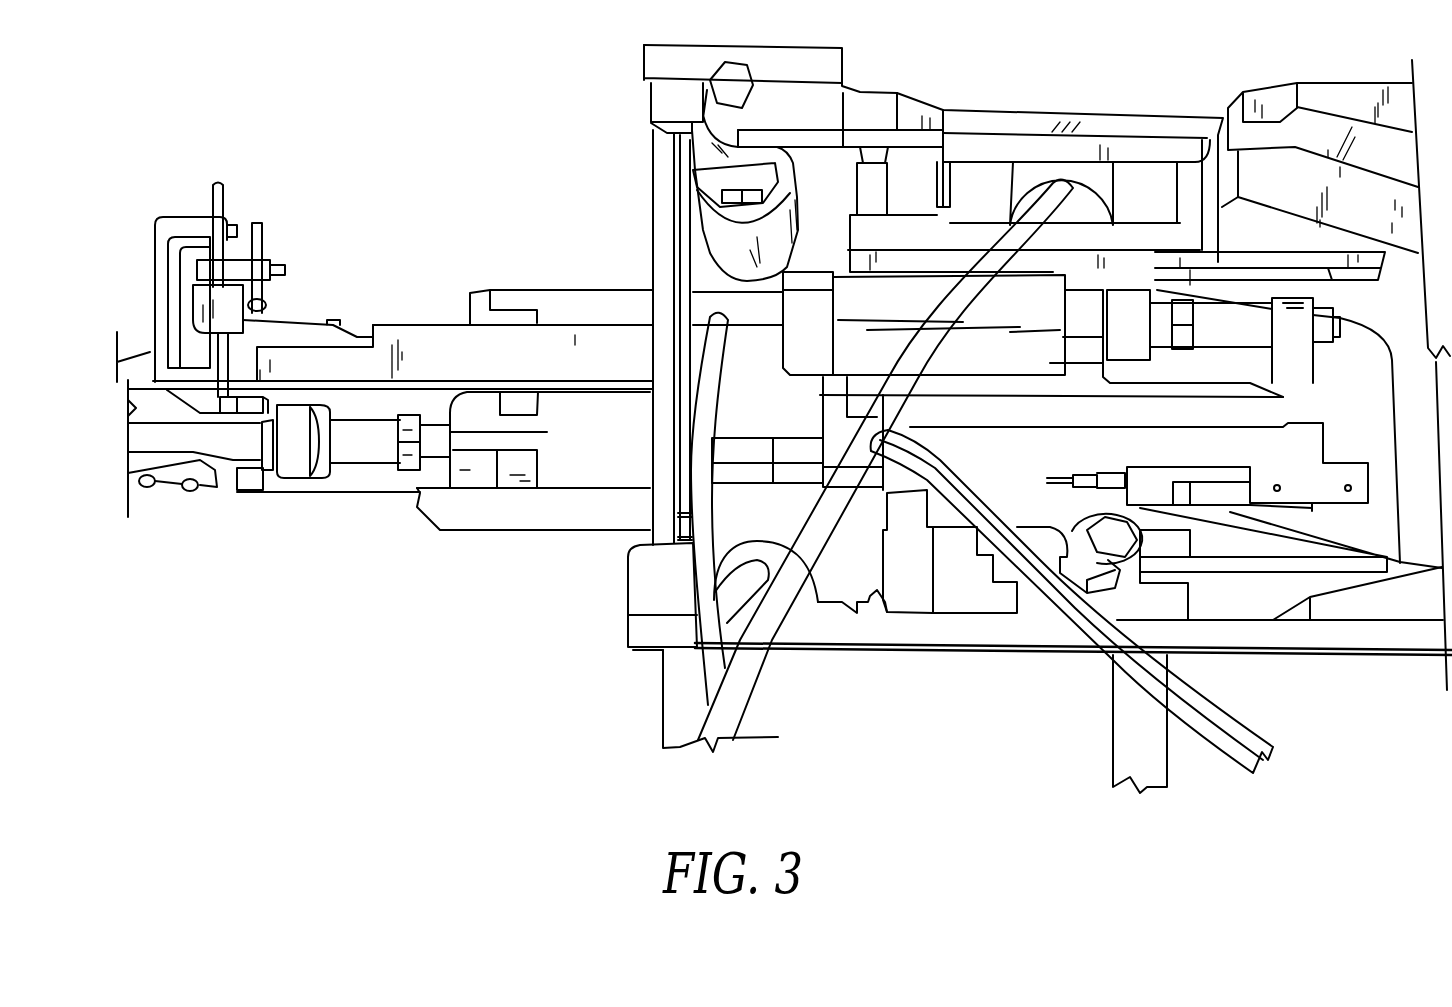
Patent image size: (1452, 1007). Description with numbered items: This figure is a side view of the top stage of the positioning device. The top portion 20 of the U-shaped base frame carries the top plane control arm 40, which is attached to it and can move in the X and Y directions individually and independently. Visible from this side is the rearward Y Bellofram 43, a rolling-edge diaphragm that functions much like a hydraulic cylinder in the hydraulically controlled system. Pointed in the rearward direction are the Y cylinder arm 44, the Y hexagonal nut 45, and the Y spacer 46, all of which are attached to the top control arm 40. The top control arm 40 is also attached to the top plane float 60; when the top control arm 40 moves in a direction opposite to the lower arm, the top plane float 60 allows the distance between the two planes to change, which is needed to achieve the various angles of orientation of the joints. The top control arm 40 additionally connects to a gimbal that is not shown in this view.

The top portion 20 is at (1033, 147).
The top plane control arm 40 is at (443, 343).
The rearward Y Bellofram 43 is at (1013, 337).
The Y cylinder arm 44 is at (1163, 317).
The Y hexagonal nut 45 is at (1175, 348).
The Y spacer 46 is at (1213, 320).
The top plane float 60 is at (247, 240).